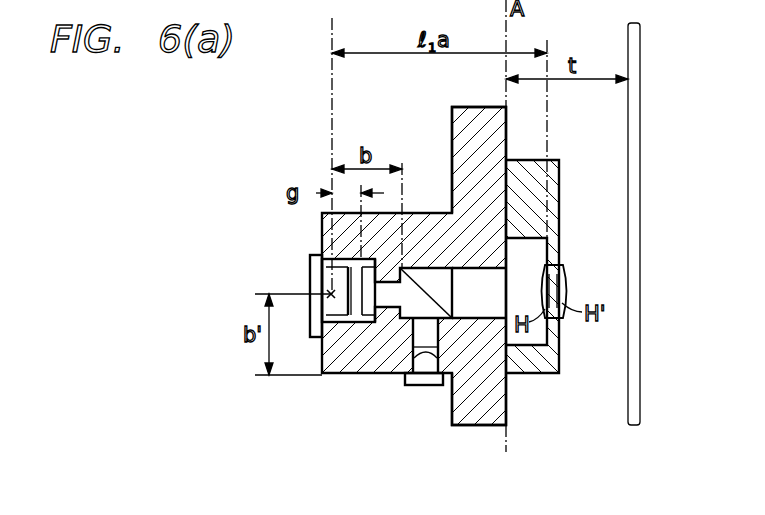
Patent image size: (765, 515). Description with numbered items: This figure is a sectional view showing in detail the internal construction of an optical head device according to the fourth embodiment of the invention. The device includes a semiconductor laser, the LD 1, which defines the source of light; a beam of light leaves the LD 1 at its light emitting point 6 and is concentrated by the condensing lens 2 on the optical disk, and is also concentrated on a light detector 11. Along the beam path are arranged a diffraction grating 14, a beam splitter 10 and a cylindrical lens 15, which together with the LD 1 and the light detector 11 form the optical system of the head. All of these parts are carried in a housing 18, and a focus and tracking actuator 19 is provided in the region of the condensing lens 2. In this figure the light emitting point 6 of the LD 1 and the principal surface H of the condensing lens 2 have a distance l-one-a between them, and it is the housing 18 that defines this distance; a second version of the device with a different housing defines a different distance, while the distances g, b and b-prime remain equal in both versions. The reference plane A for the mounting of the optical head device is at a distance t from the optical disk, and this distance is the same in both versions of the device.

The semiconductor laser (LD) 1 is at (312, 265).
The condensing lens 2 is at (563, 268).
The light emitting point 6 is at (330, 307).
The beam splitter 10 is at (432, 270).
The light detector 11 is at (420, 383).
The diffraction grating 14 is at (357, 316).
The cylindrical lens 15 is at (412, 350).
The housing 18 is at (475, 420).
The focus and tracking actuator 19 is at (557, 367).